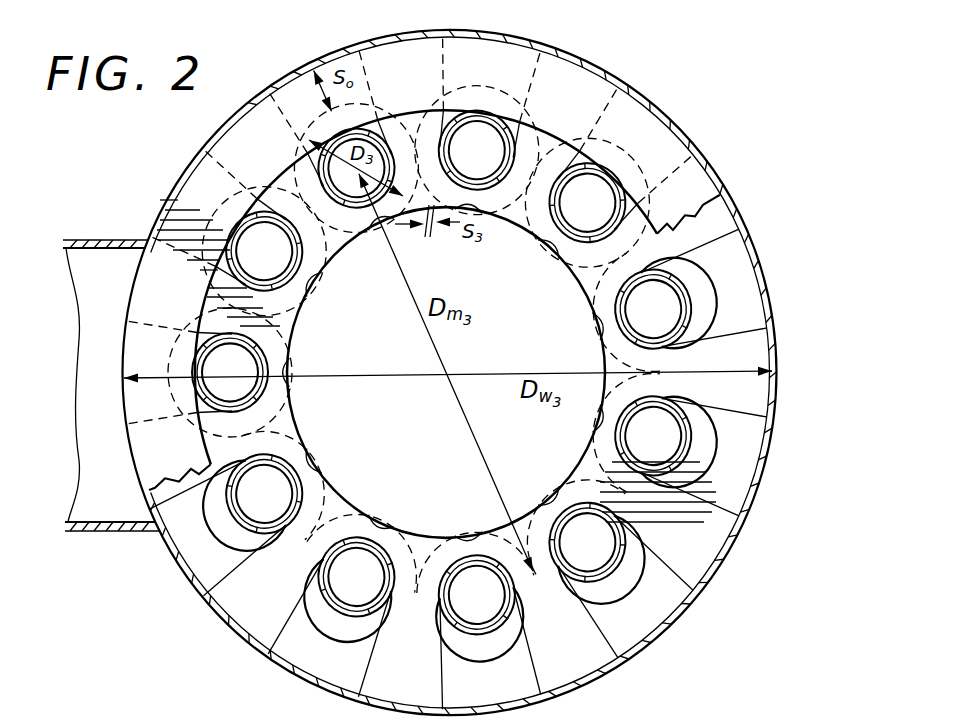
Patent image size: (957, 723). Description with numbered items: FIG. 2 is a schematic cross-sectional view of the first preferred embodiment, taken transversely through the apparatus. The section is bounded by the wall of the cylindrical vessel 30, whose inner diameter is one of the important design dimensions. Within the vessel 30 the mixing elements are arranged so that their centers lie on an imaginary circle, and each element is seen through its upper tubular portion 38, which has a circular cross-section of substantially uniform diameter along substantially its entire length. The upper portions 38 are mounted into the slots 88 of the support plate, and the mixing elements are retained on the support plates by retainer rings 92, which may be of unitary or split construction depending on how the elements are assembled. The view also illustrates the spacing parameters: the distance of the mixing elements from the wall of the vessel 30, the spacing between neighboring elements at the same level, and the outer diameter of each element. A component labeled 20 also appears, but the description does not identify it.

The heat exchanger housing 20 is at (630, 73).
The vessel 30 is at (668, 124).
The upper tubular portion 38 is at (340, 693).
The slots 88 is at (724, 270).
The retainer rings 92 is at (688, 160).